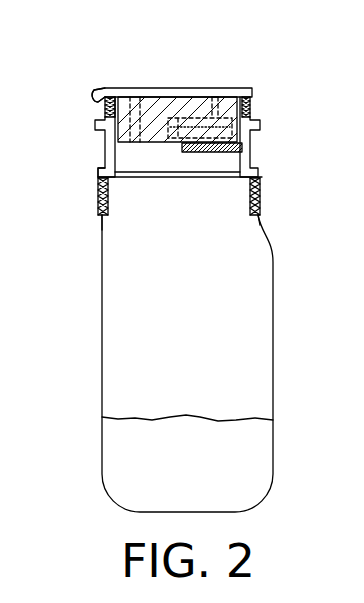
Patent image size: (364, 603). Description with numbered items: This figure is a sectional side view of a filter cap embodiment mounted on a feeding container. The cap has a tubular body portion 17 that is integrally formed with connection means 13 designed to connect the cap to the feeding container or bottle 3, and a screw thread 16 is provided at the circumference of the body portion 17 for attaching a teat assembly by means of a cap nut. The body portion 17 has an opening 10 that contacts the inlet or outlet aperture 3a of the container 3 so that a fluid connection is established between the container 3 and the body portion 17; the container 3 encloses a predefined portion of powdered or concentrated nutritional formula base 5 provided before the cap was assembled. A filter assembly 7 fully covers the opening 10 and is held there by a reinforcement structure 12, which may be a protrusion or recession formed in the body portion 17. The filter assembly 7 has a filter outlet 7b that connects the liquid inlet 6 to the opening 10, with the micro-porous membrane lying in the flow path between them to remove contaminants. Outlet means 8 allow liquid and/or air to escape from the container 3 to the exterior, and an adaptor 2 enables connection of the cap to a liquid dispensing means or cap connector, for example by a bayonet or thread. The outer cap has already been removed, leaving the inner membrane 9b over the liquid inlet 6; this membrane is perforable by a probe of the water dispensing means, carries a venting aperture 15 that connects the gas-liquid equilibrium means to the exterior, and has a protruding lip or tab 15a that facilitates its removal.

The adaptor 2 is at (262, 125).
The feeding container 3 is at (273, 320).
The opening of the container 3a is at (155, 178).
The nutritional formula base 5 is at (115, 463).
The liquid inlet 6 is at (217, 102).
The filter assembly 7 is at (192, 105).
The filter outlet 7b is at (178, 150).
The outlet means 8 is at (135, 120).
The inner membrane 9b is at (218, 92).
The opening 10 is at (124, 168).
The reinforcement structure 12 is at (213, 153).
The connection means 13 is at (262, 203).
The venting aperture 15 is at (137, 90).
The protruding lip or tab 15a is at (98, 89).
The screw thread 16 is at (105, 107).
The tubular body portion 17 is at (108, 163).